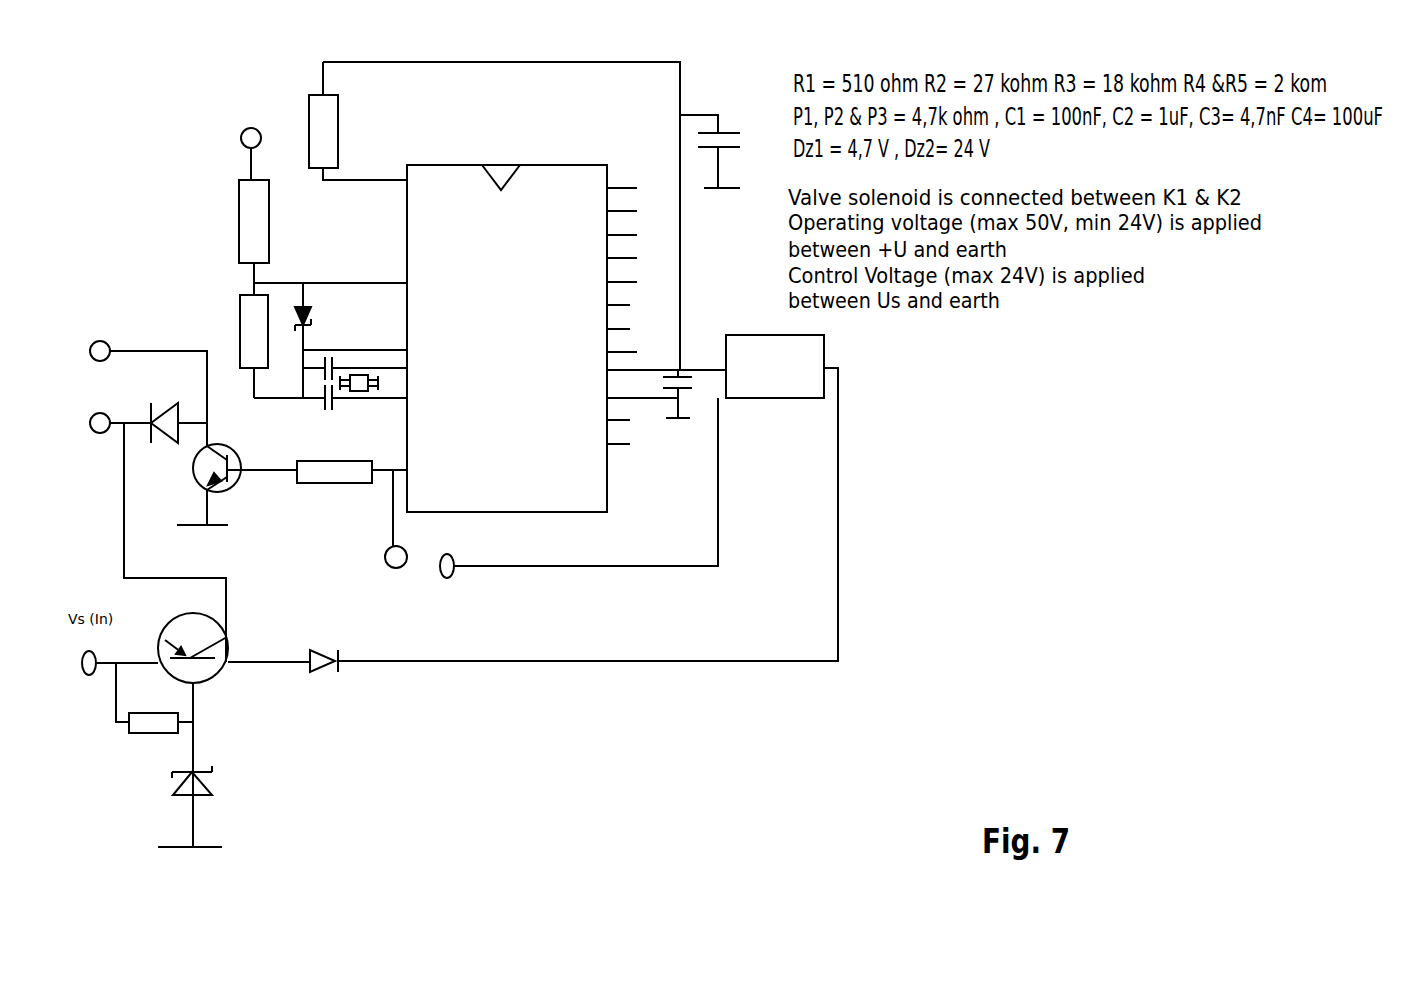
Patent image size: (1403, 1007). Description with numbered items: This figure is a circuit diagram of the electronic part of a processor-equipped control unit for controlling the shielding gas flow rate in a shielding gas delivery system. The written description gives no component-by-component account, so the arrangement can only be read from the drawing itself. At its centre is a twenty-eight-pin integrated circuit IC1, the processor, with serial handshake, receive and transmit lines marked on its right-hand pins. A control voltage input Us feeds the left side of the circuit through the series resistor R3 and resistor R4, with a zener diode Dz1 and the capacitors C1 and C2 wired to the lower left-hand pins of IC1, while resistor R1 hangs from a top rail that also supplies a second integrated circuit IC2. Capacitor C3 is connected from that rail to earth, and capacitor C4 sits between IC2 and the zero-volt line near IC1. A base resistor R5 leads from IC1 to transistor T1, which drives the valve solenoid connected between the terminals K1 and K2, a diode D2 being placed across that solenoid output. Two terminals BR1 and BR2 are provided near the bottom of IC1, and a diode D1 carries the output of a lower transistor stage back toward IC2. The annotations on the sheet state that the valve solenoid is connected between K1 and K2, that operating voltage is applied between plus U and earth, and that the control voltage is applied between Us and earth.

The resistor R1 is at (345, 121).
The resistor R3 is at (233, 237).
The resistor R4 is at (229, 346).
The resistor R5 is at (317, 461).
The capacitor C1 is at (341, 370).
The capacitor C2 is at (303, 408).
The capacitor C3 is at (696, 151).
The capacitor C4 is at (664, 399).
The zener diode Dz1 is at (320, 340).
The diode D1 is at (574, 661).
The diode D2 is at (164, 418).
The transistor T1 is at (201, 474).
The integrated circuit IC1 (microcontroller) IC1 is at (535, 338).
The integrated circuit IC2 is at (782, 498).
The bridge/jumper terminal BR1 is at (411, 519).
The bridge/jumper terminal BR2 is at (462, 576).
The solenoid terminal K1 is at (133, 382).
The solenoid terminal K2 is at (96, 414).
The control voltage input Us is at (225, 154).